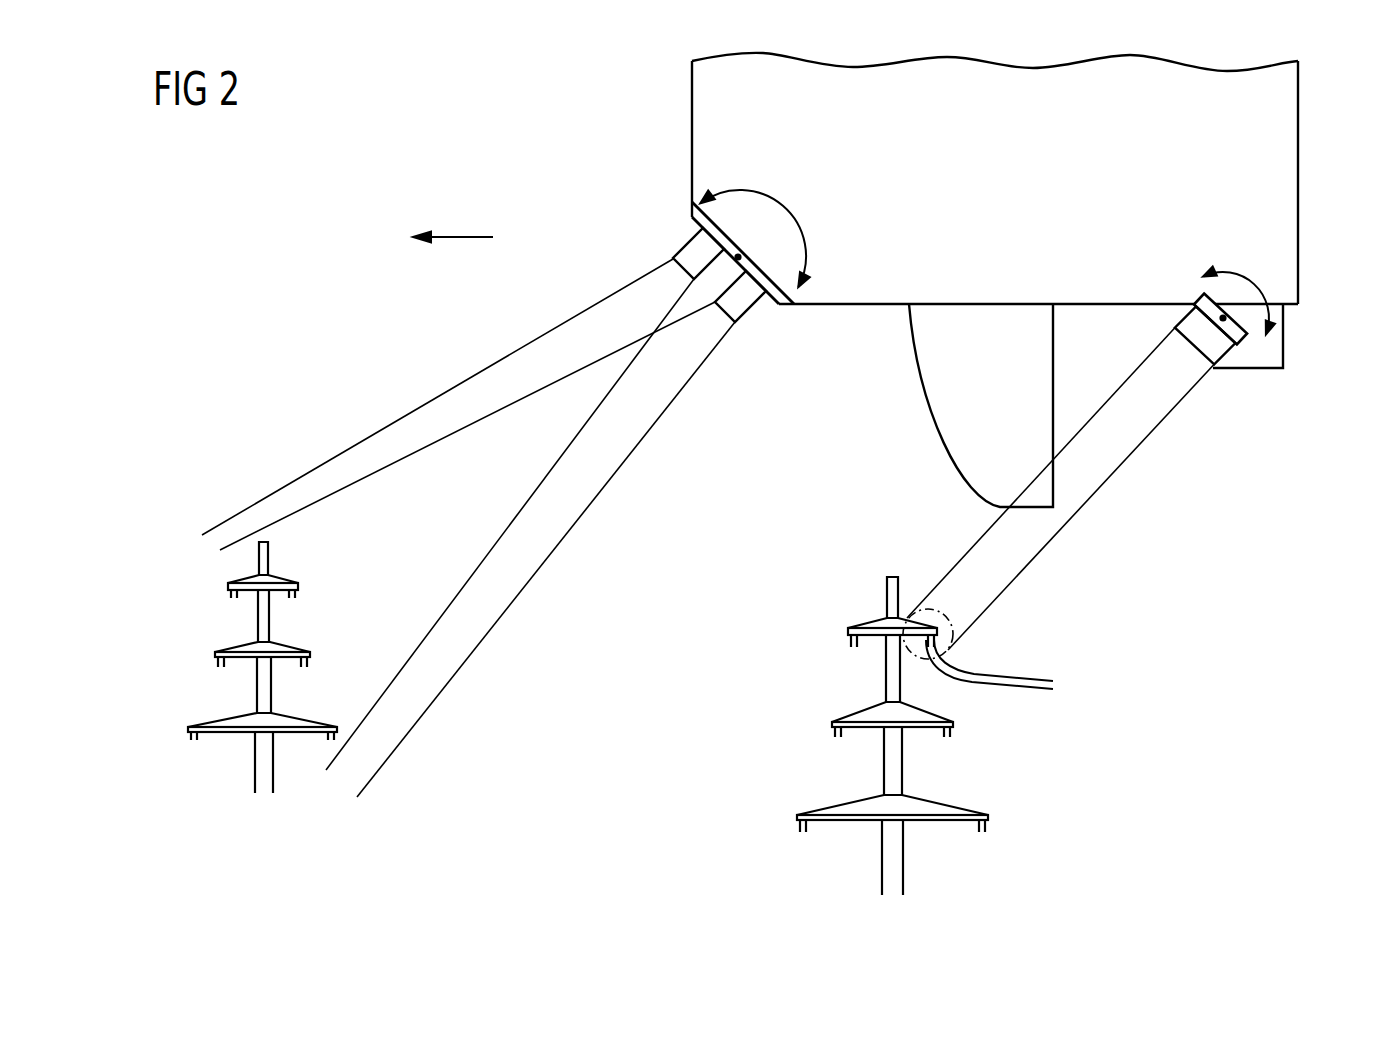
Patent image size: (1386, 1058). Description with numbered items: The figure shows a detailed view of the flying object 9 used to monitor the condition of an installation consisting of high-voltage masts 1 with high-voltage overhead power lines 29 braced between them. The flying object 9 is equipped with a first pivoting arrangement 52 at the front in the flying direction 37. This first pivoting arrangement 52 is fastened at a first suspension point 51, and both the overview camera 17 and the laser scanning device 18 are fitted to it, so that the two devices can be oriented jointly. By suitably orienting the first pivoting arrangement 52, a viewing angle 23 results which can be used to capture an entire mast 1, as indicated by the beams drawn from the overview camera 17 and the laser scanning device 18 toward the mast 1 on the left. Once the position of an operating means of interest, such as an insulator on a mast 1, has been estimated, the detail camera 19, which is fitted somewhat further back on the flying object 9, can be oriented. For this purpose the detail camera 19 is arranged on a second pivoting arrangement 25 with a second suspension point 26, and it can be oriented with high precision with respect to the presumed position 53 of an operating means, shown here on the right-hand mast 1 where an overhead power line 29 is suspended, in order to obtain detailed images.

The high-voltage mast 1 is at (254, 776).
The flying object 9 is at (692, 99).
The overview camera 17 is at (690, 257).
The laser scanning device 18 is at (738, 311).
The detail camera 19 is at (1222, 348).
The viewing angle 23 is at (412, 412).
The second pivoting arrangement 25 is at (1247, 336).
The second suspension point 26 is at (1225, 322).
The high-voltage overhead power line 29 is at (1048, 678).
The flying direction 37 is at (453, 235).
The first suspension point 51 is at (742, 254).
The first pivoting arrangement 52 is at (793, 304).
The presumed position of an operating means 53 is at (955, 645).